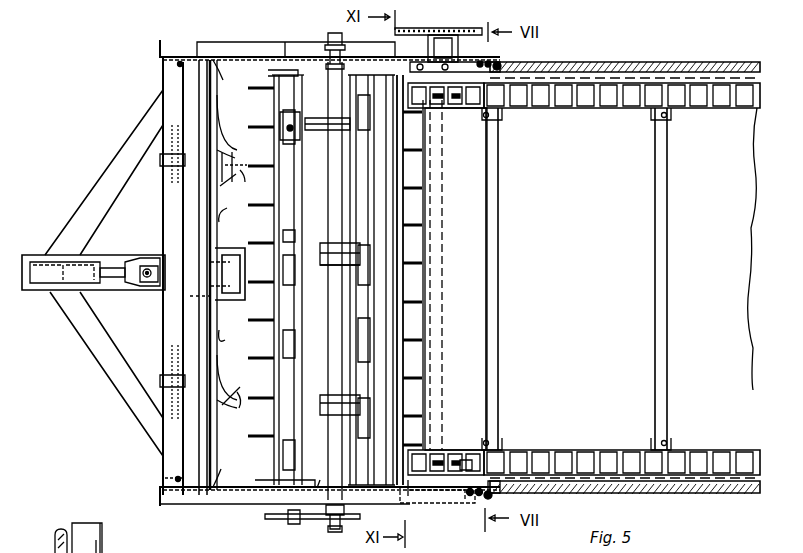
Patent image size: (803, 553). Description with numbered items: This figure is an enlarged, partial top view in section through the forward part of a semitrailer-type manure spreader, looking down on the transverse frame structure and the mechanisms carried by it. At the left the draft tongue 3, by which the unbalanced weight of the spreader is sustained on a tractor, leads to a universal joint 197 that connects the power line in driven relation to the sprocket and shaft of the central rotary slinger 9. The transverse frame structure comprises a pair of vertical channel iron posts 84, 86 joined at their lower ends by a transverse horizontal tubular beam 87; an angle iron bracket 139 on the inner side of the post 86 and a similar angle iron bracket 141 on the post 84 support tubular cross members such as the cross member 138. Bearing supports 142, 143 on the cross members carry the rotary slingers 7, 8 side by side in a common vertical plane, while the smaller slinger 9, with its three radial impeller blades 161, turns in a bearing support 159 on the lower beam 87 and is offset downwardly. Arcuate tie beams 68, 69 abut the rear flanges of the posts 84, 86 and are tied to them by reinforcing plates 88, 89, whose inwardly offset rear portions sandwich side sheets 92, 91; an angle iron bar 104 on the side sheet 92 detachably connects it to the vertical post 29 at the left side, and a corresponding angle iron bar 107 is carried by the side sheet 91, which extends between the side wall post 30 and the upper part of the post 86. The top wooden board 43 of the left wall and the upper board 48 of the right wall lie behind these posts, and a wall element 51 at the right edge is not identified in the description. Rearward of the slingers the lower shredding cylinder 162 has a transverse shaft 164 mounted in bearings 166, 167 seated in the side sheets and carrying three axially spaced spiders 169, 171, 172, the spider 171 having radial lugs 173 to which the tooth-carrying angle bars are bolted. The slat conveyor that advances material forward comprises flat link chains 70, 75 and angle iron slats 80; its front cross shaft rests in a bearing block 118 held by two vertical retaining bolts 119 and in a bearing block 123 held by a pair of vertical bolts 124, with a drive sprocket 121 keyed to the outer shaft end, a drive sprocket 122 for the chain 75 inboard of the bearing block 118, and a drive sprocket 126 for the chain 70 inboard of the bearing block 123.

The draft tongue 3 is at (30, 257).
The rotary slinger 7 is at (226, 359).
The rotary slinger 8 is at (229, 133).
The rotary slinger 9 is at (230, 254).
The vertical post 29 is at (500, 492).
The vertical post 30 is at (498, 63).
The wooden board 43 is at (712, 493).
The wooden board 48 is at (645, 62).
The side wall 51 is at (750, 370).
The tie beam 68 is at (408, 498).
The tie beam 69 is at (378, 57).
The flat link chain 70 is at (597, 452).
The flat link chain 75 is at (603, 108).
The angle iron slats 80 is at (498, 378).
The vertical channel iron post 84 is at (160, 505).
The vertical channel iron post 86 is at (166, 50).
The transverse horizontal tubular beam 87 is at (163, 479).
The reinforcing plate 88 is at (228, 486).
The reinforcing plate 89 is at (245, 66).
The side sheet 91 is at (370, 95).
The side sheet 92 is at (320, 480).
The angle iron bar 104 is at (480, 502).
The angle iron bar 107 is at (488, 60).
The bearing block 118 is at (466, 108).
The vertical retaining bolts 119 is at (434, 28).
The drive sprocket 121 is at (462, 28).
The drive sprocket 122 is at (457, 114).
The bearing block 123 is at (463, 460).
The vertical bolts 124 is at (447, 505).
The drive sprocket 126 is at (457, 445).
The tubular cross member 138 is at (200, 328).
The angle iron bracket 139 is at (178, 64).
The angle iron bracket 141 is at (178, 478).
The bearing support 142 is at (230, 412).
The bearing support 143 is at (235, 186).
The bearing support 159 is at (185, 302).
The radial impeller blades 161 is at (220, 232).
The lower shredding cylinder 162 is at (400, 324).
The transverse shaft 164 is at (326, 368).
The bearing 166 is at (326, 48).
The bearing 167 is at (350, 505).
The spider 169 is at (316, 402).
The spider 171 is at (316, 250).
The spider 172 is at (320, 136).
The radial lugs 173 is at (316, 268).
The universal joint 197 is at (146, 262).